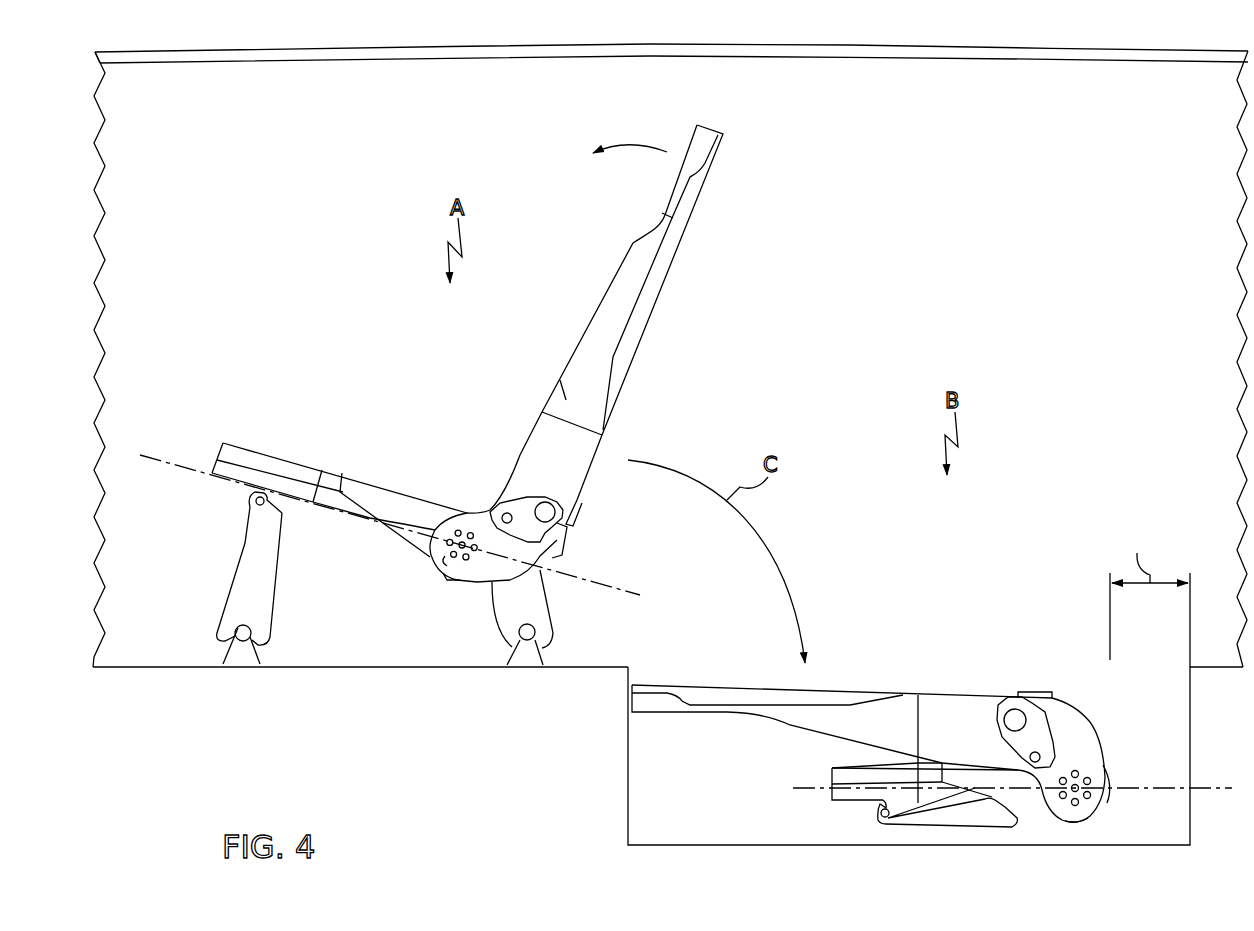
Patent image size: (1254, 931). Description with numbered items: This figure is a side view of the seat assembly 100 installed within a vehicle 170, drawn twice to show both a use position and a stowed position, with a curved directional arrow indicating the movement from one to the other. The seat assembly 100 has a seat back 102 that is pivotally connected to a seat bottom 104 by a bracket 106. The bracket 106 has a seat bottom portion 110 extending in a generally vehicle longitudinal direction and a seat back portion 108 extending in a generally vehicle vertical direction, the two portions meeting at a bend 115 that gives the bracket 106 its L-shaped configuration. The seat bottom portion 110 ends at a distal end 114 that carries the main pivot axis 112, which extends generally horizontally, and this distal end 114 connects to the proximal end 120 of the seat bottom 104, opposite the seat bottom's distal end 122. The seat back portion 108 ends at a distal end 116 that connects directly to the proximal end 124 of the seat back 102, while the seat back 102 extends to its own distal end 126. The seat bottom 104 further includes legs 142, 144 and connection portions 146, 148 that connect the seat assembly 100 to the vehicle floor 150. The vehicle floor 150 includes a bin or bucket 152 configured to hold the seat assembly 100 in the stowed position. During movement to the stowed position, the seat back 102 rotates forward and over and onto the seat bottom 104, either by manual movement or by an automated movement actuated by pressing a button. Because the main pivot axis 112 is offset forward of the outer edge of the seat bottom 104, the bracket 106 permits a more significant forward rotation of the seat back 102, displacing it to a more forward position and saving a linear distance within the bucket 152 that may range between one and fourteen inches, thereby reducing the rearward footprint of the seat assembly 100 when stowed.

The seat assembly 100 is at (390, 327).
The seat back 102 is at (608, 255).
The seat bottom 104 is at (345, 452).
The bracket 106 is at (582, 502).
The seat back portion 108 is at (538, 432).
The seat bottom portion 110 is at (487, 565).
The main pivot axis 112 is at (445, 556).
The distal end 114 is at (443, 553).
The bend 115 is at (548, 556).
The distal end 116 is at (603, 442).
The proximal end 120 is at (463, 522).
The distal end 122 is at (228, 447).
The proximal end 124 is at (567, 410).
The distal end 126 is at (698, 191).
The leg 142 is at (252, 550).
The leg 144 is at (543, 627).
The connection portion 146 is at (243, 650).
The connection portion 148 is at (530, 652).
The vehicle floor 150 is at (183, 665).
The bucket 152 is at (1113, 685).
The vehicle 170 is at (268, 193).